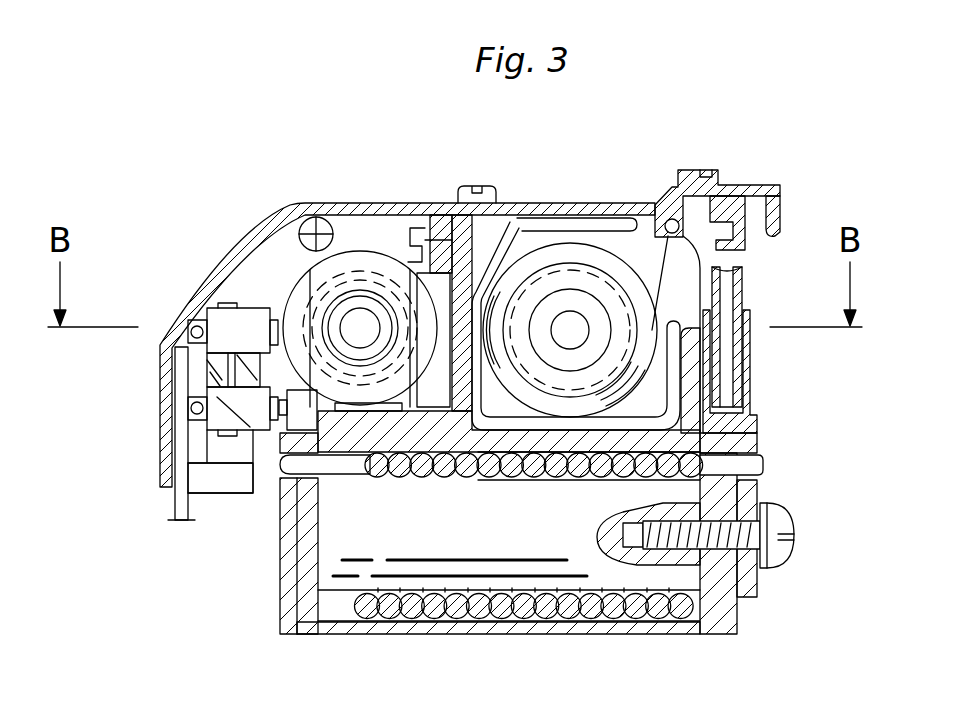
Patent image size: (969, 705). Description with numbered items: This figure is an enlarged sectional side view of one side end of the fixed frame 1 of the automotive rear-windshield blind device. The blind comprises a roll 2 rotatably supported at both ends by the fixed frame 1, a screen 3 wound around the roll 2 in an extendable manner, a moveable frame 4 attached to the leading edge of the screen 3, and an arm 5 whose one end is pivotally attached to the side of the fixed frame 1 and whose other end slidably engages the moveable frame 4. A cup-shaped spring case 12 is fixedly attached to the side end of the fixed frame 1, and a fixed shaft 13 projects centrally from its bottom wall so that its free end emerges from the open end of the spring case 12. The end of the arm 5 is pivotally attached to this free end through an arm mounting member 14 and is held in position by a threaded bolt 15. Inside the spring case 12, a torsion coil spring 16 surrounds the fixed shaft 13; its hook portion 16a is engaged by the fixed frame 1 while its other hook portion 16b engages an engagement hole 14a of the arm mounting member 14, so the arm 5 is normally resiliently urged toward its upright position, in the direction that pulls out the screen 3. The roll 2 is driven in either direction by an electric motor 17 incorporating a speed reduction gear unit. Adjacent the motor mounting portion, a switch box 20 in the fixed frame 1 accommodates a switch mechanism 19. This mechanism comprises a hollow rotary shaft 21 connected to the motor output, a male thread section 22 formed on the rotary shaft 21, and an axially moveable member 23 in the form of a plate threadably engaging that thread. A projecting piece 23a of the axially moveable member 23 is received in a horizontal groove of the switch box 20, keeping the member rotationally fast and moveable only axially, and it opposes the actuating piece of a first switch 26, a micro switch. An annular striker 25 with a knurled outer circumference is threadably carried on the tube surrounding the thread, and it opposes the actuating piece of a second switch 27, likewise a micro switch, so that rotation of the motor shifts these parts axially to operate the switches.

The fixed frame 1 is at (463, 440).
The roll 2 is at (577, 273).
The screen 3 is at (552, 253).
The moveable frame 4 is at (675, 190).
The arm 5 is at (742, 300).
The spring case 12 is at (390, 627).
The fixed shaft 13 is at (337, 590).
The arm mounting member 14 is at (718, 635).
The engagement hole 14a is at (732, 466).
The threaded bolt 15 is at (785, 560).
The torsion coil spring 16 is at (587, 620).
The hook portion 16a is at (330, 481).
The hook portion 16b is at (764, 463).
The electric motor 17 is at (223, 257).
The switch mechanism 19 is at (338, 240).
The switch box 20 is at (188, 328).
The rotary shaft 21 is at (360, 318).
The male thread section 22 is at (413, 280).
The axially moveable member 23 is at (383, 296).
The projecting piece 23a is at (280, 438).
The striker 25 is at (297, 275).
The first switch 26 is at (208, 440).
The second switch 27 is at (258, 307).